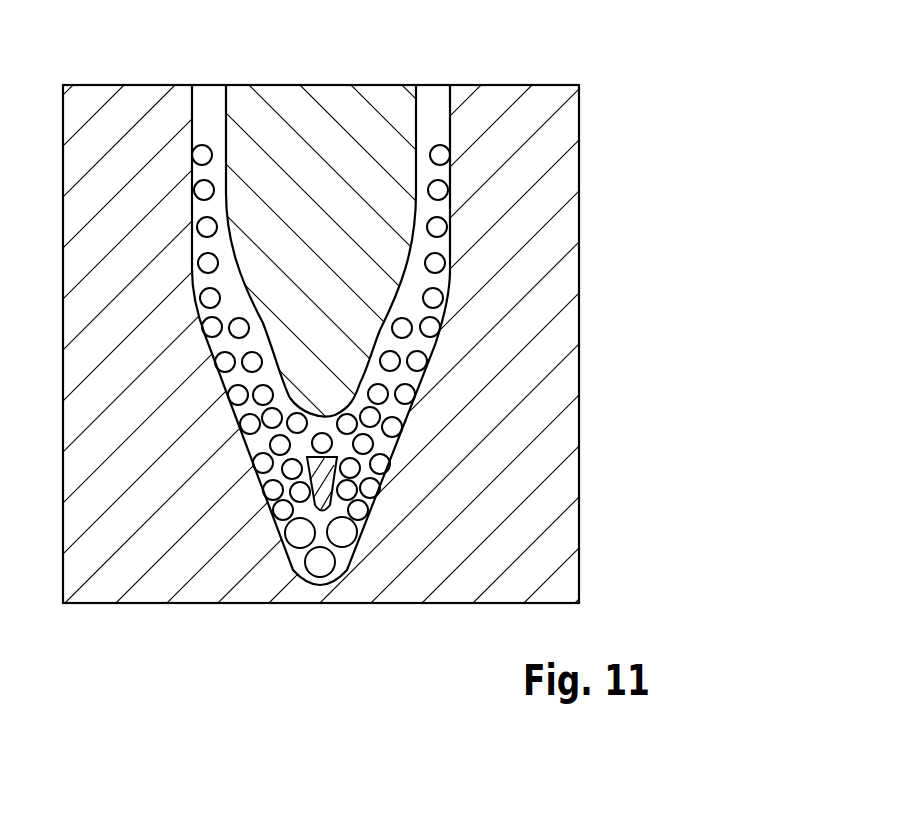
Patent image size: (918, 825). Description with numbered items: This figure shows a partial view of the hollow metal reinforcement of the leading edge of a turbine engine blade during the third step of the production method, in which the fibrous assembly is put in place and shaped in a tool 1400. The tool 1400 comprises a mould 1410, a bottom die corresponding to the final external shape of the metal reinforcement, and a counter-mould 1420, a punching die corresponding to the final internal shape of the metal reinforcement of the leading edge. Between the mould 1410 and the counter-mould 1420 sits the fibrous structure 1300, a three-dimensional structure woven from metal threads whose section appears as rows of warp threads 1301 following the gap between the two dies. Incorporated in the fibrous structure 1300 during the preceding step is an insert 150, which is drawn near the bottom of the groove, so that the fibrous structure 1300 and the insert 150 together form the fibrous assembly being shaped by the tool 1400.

The tool 1400 is at (459, 342).
The fibrous structure 1300 is at (373, 526).
The mould 1410 is at (410, 418).
The counter-mould 1420 is at (345, 127).
The warp threads 1301 is at (420, 359).
The insert 150 is at (315, 485).